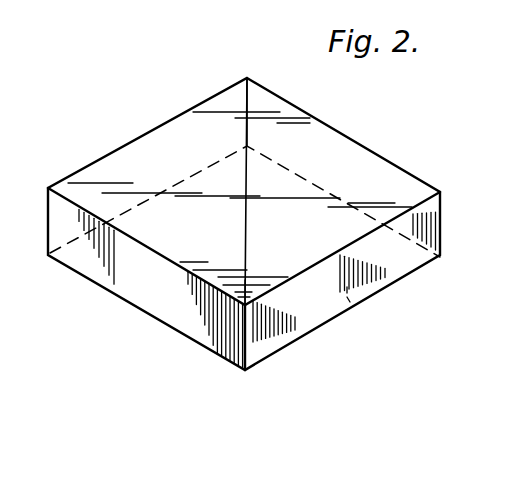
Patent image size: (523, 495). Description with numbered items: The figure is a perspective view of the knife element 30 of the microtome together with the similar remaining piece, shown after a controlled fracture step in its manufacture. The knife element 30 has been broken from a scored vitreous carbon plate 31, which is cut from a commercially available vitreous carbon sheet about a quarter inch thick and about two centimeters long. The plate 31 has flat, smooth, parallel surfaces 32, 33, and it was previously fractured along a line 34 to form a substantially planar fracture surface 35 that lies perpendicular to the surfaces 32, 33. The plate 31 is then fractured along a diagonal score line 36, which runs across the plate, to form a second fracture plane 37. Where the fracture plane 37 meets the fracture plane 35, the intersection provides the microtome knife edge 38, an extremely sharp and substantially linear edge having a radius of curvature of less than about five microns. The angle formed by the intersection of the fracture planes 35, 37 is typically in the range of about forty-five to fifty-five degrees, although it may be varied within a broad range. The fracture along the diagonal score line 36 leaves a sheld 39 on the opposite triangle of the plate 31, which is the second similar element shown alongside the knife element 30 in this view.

The knife element 30 is at (353, 162).
The vitreous carbon plate 31 is at (153, 138).
The flat, smooth, parallel surface 32 is at (410, 185).
The flat, smooth, parallel surface 33 is at (353, 308).
The fracture line 34 is at (143, 248).
The fracture surface 35 is at (178, 317).
The diagonal score line 36 is at (250, 163).
The fracture plane 37 is at (245, 277).
The microtome knife edge 38 is at (247, 342).
The sheld 39 is at (245, 372).